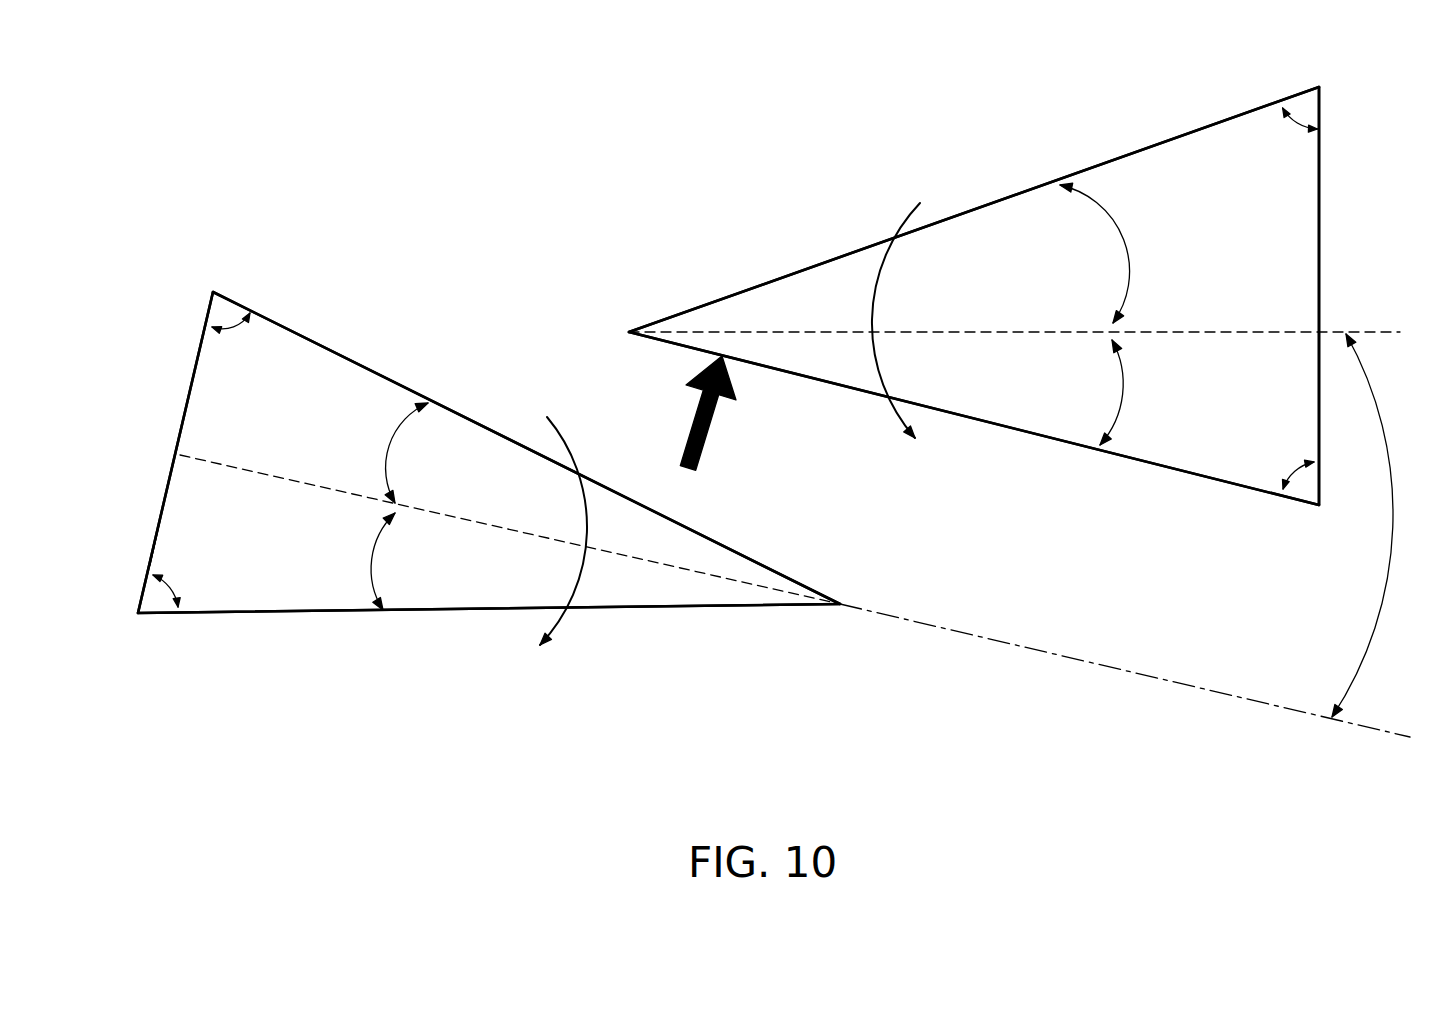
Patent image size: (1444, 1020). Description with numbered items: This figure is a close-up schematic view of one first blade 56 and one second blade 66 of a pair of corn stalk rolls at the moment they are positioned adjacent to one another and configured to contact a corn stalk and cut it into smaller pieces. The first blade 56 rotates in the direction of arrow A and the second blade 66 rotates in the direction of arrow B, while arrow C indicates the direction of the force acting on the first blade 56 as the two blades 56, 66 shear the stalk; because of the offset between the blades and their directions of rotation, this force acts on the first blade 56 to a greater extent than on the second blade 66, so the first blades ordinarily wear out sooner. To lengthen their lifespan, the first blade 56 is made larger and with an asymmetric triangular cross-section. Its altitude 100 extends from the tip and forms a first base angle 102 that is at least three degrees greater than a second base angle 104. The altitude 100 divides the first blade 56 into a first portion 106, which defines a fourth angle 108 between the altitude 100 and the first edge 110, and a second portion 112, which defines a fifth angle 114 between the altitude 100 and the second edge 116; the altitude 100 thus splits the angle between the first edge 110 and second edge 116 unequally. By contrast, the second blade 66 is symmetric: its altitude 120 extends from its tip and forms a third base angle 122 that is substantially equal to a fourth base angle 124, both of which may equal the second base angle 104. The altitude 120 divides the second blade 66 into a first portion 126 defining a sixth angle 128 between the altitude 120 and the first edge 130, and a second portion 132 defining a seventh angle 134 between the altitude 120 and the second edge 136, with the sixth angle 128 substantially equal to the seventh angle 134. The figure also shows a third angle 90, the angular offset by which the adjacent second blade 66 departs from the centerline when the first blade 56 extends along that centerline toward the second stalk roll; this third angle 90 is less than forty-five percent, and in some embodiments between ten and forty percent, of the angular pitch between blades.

The first blade 56 is at (1247, 125).
The second blade 66 is at (337, 362).
The third angle 90 is at (1390, 532).
The altitude 100 is at (1213, 333).
The first base angle 102 is at (1290, 122).
The second base angle 104 is at (1290, 480).
The first portion 106 is at (1305, 195).
The fourth angle 108 is at (1123, 258).
The first edge 110 is at (1203, 125).
The second portion 112 is at (1306, 388).
The fifth angle 114 is at (1120, 390).
The second edge 116 is at (1220, 488).
The altitude 120 is at (287, 478).
The third base angle 122 is at (228, 327).
The fourth base angle 124 is at (172, 592).
The first portion 126 is at (203, 402).
The sixth angle 128 is at (390, 455).
The first edge 130 is at (442, 402).
The second portion 132 is at (170, 560).
The seventh angle 134 is at (372, 550).
The second edge 136 is at (245, 617).
The direction of rotation of the first blade A is at (878, 272).
The direction of rotation of the second blade B is at (580, 582).
The direction of shearing force C is at (713, 423).